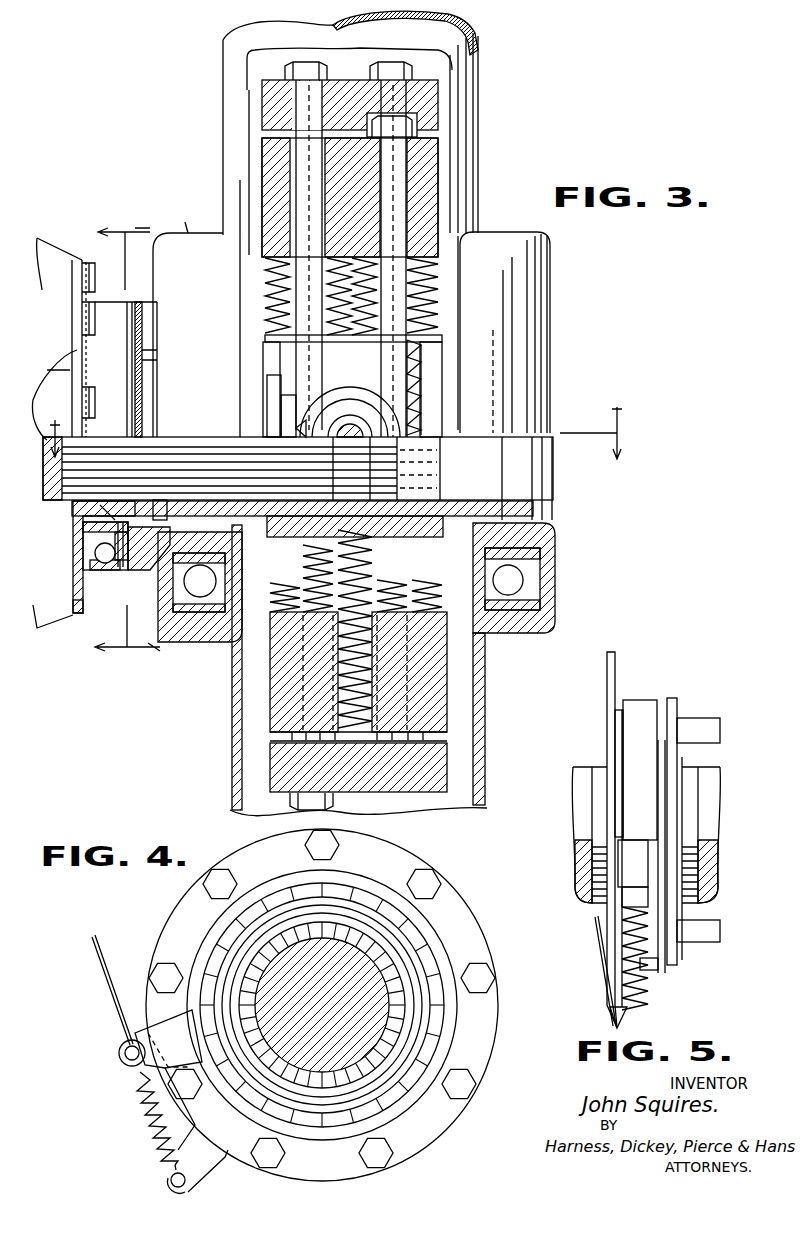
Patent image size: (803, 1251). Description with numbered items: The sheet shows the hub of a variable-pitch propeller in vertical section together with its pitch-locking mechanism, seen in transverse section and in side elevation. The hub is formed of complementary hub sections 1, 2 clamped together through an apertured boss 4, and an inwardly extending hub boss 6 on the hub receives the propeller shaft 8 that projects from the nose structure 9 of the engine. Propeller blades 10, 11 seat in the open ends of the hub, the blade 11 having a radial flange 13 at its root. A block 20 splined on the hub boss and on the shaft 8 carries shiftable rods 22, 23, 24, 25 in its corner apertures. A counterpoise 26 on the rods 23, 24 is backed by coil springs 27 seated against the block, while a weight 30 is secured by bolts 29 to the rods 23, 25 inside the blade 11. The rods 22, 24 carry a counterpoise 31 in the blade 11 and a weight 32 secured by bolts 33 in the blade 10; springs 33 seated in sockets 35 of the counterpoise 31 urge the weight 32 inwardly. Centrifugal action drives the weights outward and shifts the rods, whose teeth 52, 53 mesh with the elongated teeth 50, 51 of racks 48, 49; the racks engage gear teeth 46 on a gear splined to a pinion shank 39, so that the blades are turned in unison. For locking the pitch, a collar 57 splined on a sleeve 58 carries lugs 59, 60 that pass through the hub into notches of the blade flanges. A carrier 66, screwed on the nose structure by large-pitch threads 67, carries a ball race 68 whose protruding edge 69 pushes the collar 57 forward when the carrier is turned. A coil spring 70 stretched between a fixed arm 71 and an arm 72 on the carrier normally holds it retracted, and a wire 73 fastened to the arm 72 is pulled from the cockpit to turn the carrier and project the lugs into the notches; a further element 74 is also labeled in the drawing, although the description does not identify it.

In FIG. 3, the hub section 1 is at (181, 220).
In FIG. 3, the hub section 2 is at (508, 228).
In FIG. 3, the apertured boss 4 is at (115, 442).
In FIG. 3, the hub boss 6 is at (325, 435).
In FIG. 3, the propeller shaft 8 is at (503, 457).
In FIG. 4, the propeller shaft 8 is at (380, 1028).
In FIG. 5, the propeller shaft 8 is at (717, 842).
In FIG. 3, the nose structure 9 is at (33, 630).
In FIG. 3, the propeller blade 10 is at (466, 92).
In FIG. 3, the propeller blade 11 is at (486, 690).
In FIG. 3, the radial flange 13 is at (520, 565).
In FIG. 3, the block 20 is at (363, 348).
In FIG. 3, the shiftable rod 22 is at (400, 600).
In FIG. 3, the shiftable rod 23 is at (400, 245).
In FIG. 3, the shiftable rod 24 is at (280, 303).
In FIG. 3, the shiftable rod 25 is at (290, 580).
In FIG. 3, the counterpoise 26 is at (438, 165).
In FIG. 3, the coil spring 27 is at (440, 292).
In FIG. 3, the bolt 29 is at (412, 70).
In FIG. 3, the weight 30 is at (447, 775).
In FIG. 3, the counterpoise 31 is at (440, 737).
In FIG. 3, the weight 32 is at (425, 92).
In FIG. 3, the spring 33 is at (385, 585).
In FIG. 3, the socket 35 is at (372, 682).
In FIG. 3, the shank portion 39 is at (410, 415).
In FIG. 3, the gear teeth 46 is at (418, 405).
In FIG. 3, the rack 48 is at (418, 378).
In FIG. 3, the rack 49 is at (285, 400).
In FIG. 3, the elongated teeth 50 is at (402, 375).
In FIG. 3, the elongated teeth 51 is at (285, 392).
In FIG. 3, the teeth 52 is at (370, 385).
In FIG. 3, the teeth 53 is at (296, 430).
In FIG. 3, the collar 57 is at (140, 570).
In FIG. 4, the collar 57 is at (387, 1060).
In FIG. 3, the sleeve 58 is at (95, 540).
In FIG. 4, the sleeve 58 is at (380, 1035).
In FIG. 3, the lug 59 is at (160, 510).
In FIG. 5, the lug 59 is at (713, 933).
In FIG. 3, the lug 60 is at (147, 328).
In FIG. 5, the lug 60 is at (710, 733).
In FIG. 3, the carrier 66 is at (90, 523).
In FIG. 4, the carrier 66 is at (212, 935).
In FIG. 3, the threads 67 is at (110, 520).
In FIG. 5, the threads 67 is at (670, 910).
In FIG. 3, the ball race 68 is at (120, 560).
In FIG. 4, the ball race 68 is at (390, 1113).
In FIG. 5, the ball race 68 is at (658, 967).
In FIG. 3, the protruding edge portion 69 is at (96, 600).
In FIG. 4, the coil spring 70 is at (140, 1097).
In FIG. 5, the coil spring 70 is at (645, 995).
In FIG. 4, the fixed arm 71 is at (212, 1160).
In FIG. 5, the fixed arm 71 is at (612, 1028).
In FIG. 4, the arm 72 is at (140, 1030).
In FIG. 5, the arm 72 is at (642, 840).
In FIG. 4, the wire 73 is at (92, 935).
In FIG. 5, the wire 73 is at (597, 948).
In FIG. 3, the hub flange 74 is at (82, 287).
In FIG. 4, the hub flange 74 is at (168, 965).
In FIG. 5, the hub flange 74 is at (636, 770).